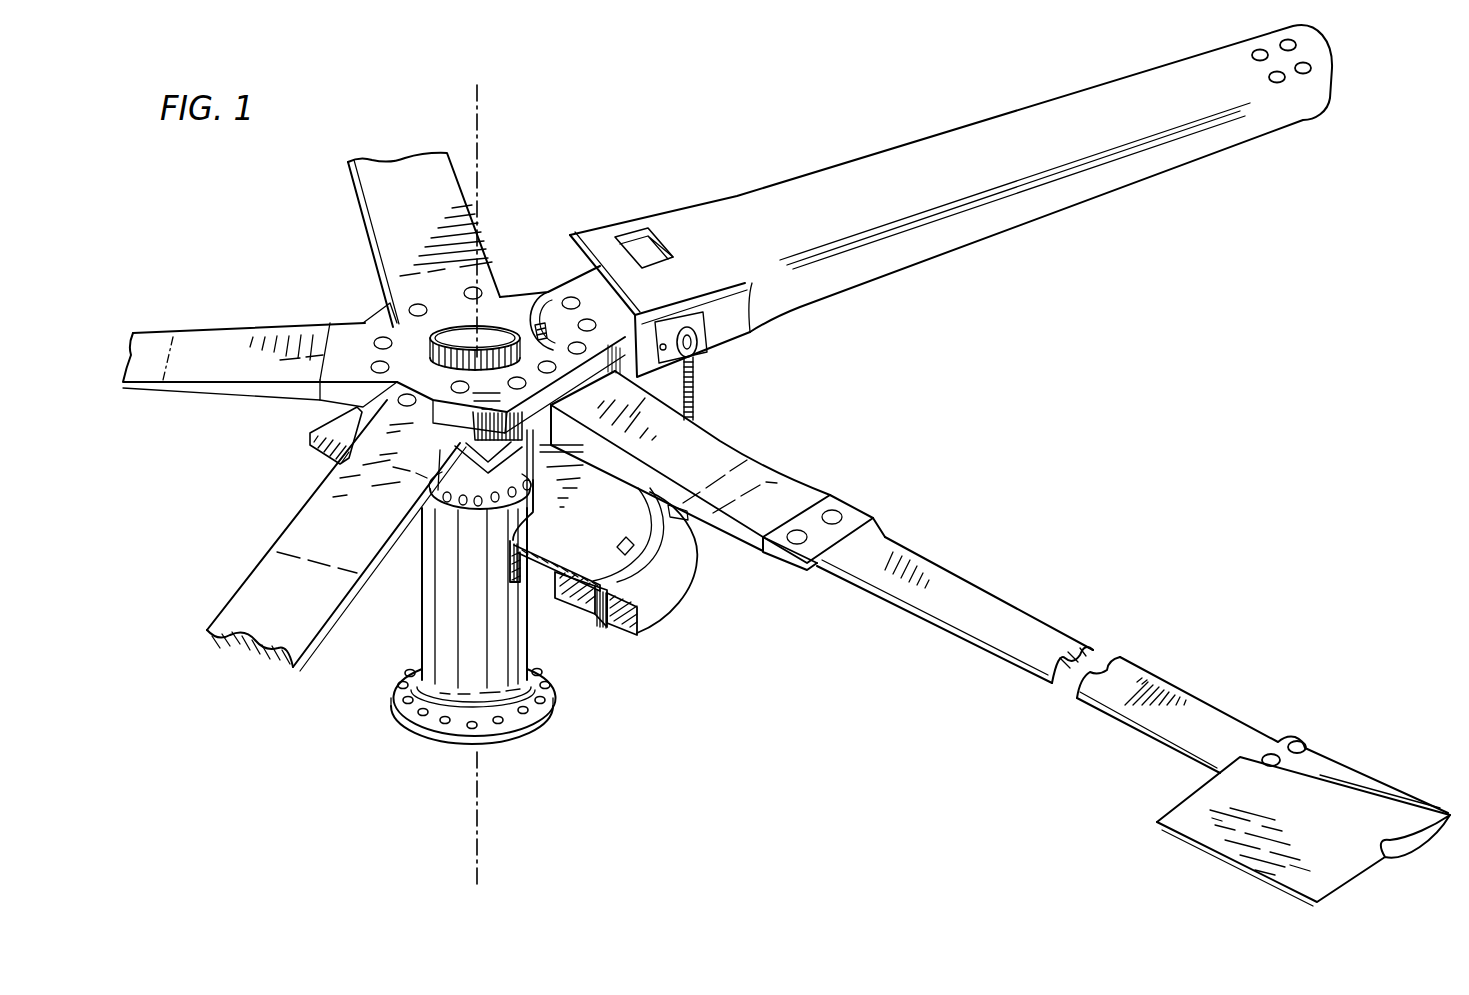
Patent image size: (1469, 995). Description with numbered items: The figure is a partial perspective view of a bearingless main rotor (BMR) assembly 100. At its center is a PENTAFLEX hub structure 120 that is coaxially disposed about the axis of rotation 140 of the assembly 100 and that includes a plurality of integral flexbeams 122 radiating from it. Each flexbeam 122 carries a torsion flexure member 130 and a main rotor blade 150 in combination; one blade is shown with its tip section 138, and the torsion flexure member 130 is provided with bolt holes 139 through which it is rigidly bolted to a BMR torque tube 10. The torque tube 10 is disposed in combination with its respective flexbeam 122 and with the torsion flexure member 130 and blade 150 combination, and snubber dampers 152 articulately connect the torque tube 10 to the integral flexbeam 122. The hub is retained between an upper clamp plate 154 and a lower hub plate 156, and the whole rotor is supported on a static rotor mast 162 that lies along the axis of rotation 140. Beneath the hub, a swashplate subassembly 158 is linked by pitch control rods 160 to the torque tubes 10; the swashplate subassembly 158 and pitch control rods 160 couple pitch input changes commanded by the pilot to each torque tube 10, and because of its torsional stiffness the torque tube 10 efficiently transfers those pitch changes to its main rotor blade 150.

The bearingless main rotor torque tube 10 is at (805, 122).
The bearingless main rotor assembly 100 is at (539, 158).
The hub structure 120 is at (360, 290).
The integral flexbeam 122 is at (690, 450).
The torsion flexure member 130 is at (940, 553).
The blade tip section 138 is at (1365, 796).
The bolt hole 139 is at (1308, 744).
The axis of rotation 140 is at (478, 847).
The main rotor blade 150 is at (1289, 816).
The snubber damper 152 is at (649, 243).
The upper clamp plate 154 is at (560, 288).
The lower hub plate 156 is at (340, 431).
The swashplate subassembly 158 is at (653, 578).
The pitch control rod 160 is at (697, 396).
The static rotor mast 162 is at (447, 622).